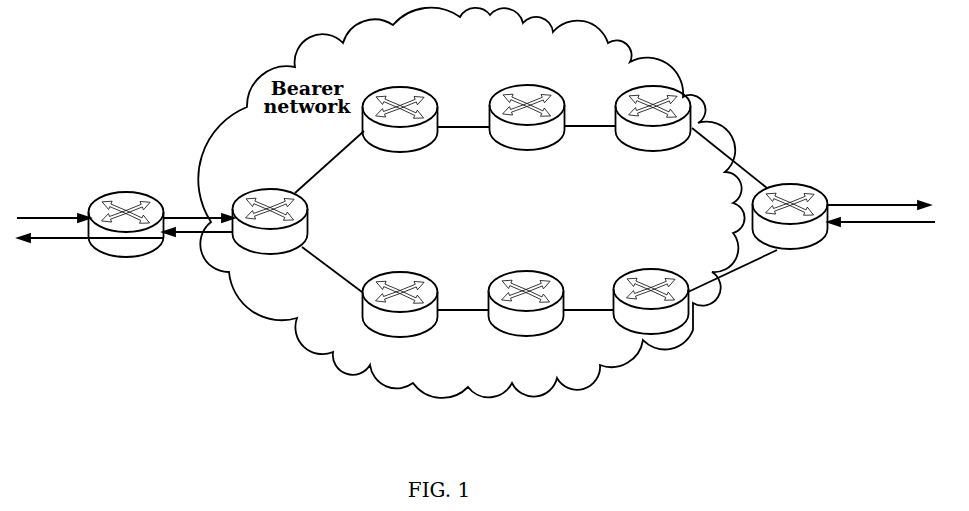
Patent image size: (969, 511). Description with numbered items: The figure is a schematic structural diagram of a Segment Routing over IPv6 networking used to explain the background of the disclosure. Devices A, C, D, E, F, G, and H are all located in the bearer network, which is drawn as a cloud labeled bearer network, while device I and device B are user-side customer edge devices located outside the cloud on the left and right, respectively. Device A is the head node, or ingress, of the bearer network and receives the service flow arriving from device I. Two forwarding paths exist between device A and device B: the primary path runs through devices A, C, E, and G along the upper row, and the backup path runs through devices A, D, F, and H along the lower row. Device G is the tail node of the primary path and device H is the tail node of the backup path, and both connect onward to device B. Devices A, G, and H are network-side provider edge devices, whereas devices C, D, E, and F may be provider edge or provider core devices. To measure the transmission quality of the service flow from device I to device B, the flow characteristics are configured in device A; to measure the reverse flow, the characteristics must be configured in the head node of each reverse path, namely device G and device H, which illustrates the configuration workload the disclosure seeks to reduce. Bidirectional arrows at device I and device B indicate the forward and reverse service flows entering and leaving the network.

The device I is at (126, 242).
The device A is at (270, 229).
The device C is at (400, 105).
The device E is at (527, 99).
The device G is at (653, 104).
The device D is at (400, 321).
The device F is at (526, 320).
The device H is at (651, 319).
The device B is at (790, 231).